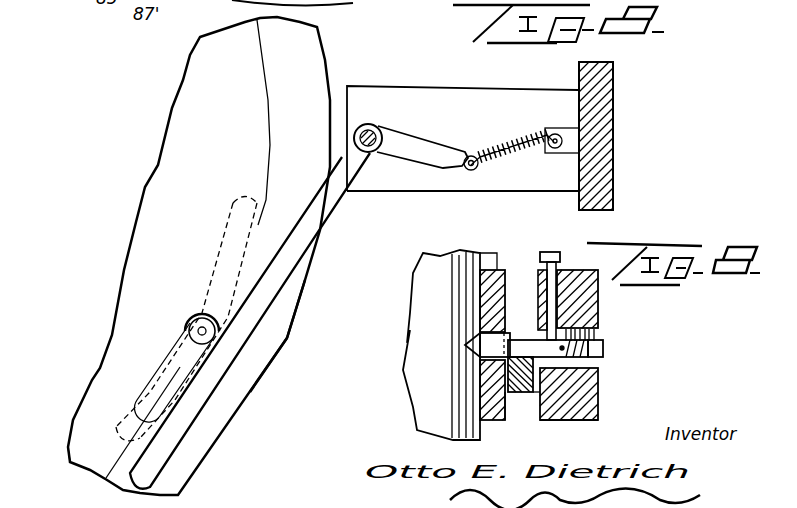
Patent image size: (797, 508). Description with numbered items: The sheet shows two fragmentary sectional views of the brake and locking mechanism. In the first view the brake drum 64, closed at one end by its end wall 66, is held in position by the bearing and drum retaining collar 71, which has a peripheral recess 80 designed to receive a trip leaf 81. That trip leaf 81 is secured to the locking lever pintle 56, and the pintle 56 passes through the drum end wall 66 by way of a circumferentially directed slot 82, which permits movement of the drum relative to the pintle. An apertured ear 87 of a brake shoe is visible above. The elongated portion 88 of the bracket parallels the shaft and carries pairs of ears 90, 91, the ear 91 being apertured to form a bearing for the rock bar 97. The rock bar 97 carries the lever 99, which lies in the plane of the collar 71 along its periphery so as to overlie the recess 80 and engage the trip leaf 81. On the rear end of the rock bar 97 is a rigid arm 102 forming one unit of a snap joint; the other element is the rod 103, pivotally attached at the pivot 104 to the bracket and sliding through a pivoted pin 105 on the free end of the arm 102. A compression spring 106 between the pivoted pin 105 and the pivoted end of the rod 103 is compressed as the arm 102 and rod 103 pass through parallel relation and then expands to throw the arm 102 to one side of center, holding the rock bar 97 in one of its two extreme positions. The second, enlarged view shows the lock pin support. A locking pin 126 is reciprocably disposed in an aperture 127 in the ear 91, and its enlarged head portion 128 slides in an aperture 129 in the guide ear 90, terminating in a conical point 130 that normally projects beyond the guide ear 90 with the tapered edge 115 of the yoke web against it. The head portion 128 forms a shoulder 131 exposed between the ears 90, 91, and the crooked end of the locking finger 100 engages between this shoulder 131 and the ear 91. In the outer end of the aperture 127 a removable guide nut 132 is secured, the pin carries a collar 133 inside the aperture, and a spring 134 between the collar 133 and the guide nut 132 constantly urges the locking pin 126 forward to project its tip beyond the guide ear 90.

In FIG. 8, the locking lever pintle 56 is at (204, 340).
In FIG. 8, the brake drum 64 is at (287, 340).
In FIG. 8, the end wall 66 is at (293, 311).
In FIG. 8, the bearing and drum retaining collar 71 is at (270, 113).
In FIG. 8, the peripheral recess 80 is at (210, 300).
In FIG. 8, the trip leaf 81 is at (180, 367).
In FIG. 8, the circumferentially directed slot 82 is at (130, 410).
In FIG. 8, the apertured ear 87 is at (409, 11).
In FIG. 8, the elongated portion of bracket 88 is at (614, 172).
In FIG. 9, the guide ear 90 is at (497, 268).
In FIG. 8, the ear 91 is at (455, 95).
In FIG. 9, the ear 91 is at (580, 273).
In FIG. 8, the rock bar 97 is at (380, 124).
In FIG. 8, the lever 99 is at (334, 205).
In FIG. 9, the locking finger 100 is at (527, 388).
In FIG. 8, the rigid arm 102 is at (430, 148).
In FIG. 8, the rod 103 is at (453, 167).
In FIG. 8, the pivot 104 is at (565, 140).
In FIG. 8, the pivoted pin 105 is at (467, 150).
In FIG. 8, the compression spring 106 is at (517, 146).
In FIG. 9, the tapered edge 115 is at (477, 368).
In FIG. 9, the locking pin 126 is at (603, 345).
In FIG. 9, the aperture 127 is at (590, 377).
In FIG. 9, the head portion 128 is at (505, 246).
In FIG. 9, the aperture 129 is at (490, 330).
In FIG. 9, the conical point 130 is at (467, 347).
In FIG. 9, the shoulder 131 is at (467, 397).
In FIG. 9, the removable guide nut 132 is at (605, 350).
In FIG. 9, the collar 133 is at (595, 315).
In FIG. 9, the spring 134 is at (588, 364).